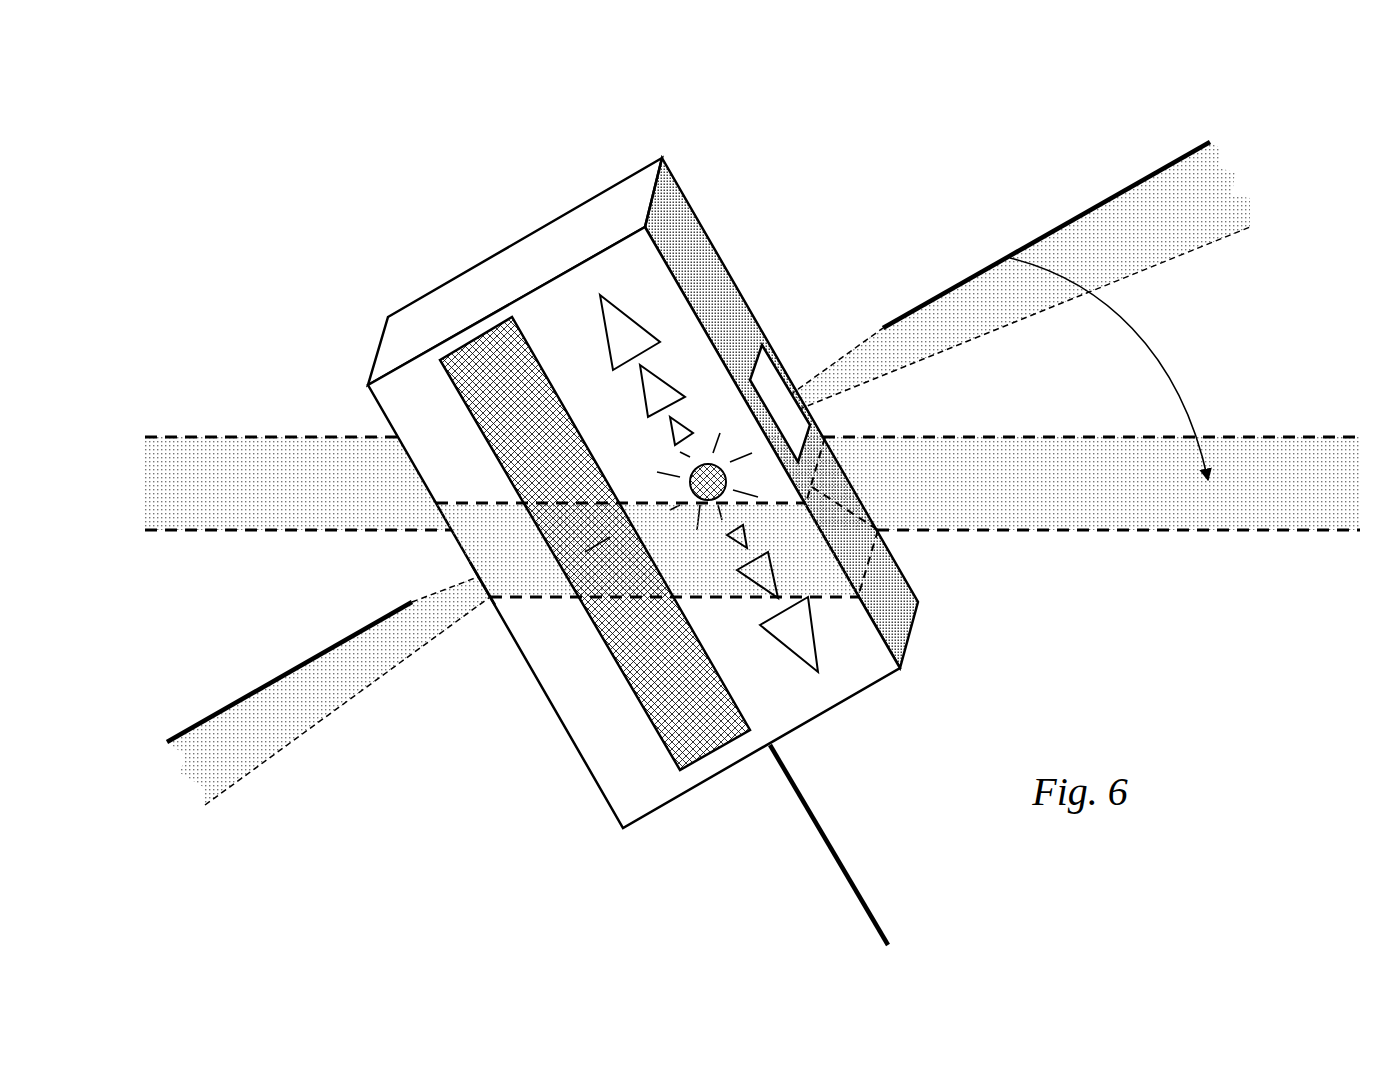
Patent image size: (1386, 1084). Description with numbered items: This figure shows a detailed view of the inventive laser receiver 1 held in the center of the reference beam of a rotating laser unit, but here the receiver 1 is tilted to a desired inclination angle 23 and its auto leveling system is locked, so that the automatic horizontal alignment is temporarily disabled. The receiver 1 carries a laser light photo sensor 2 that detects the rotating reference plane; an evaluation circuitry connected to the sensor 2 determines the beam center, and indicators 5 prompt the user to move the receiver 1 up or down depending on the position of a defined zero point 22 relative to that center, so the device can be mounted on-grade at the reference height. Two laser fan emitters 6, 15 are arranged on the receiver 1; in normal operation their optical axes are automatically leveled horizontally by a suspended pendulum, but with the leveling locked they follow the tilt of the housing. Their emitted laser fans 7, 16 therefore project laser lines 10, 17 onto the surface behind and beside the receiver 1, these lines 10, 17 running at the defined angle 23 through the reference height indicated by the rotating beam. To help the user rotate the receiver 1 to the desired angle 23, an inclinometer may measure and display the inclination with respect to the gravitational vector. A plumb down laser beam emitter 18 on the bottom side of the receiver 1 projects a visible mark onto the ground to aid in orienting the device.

The laser receiver 1 is at (643, 490).
The laser light photo sensor 2 is at (595, 568).
The indicators 5 is at (752, 507).
The first laser fan emitter 6 is at (455, 567).
The emitted laser fan 7 is at (328, 700).
The laser line 10 is at (289, 672).
The second laser fan emitter 15 is at (791, 376).
The emitted laser fan 16 is at (1015, 279).
The laser line 17 is at (1046, 235).
The plumb down laser beam emitter 18 is at (791, 845).
The zero point 22 is at (562, 651).
The inclination angle 23 is at (1109, 369).